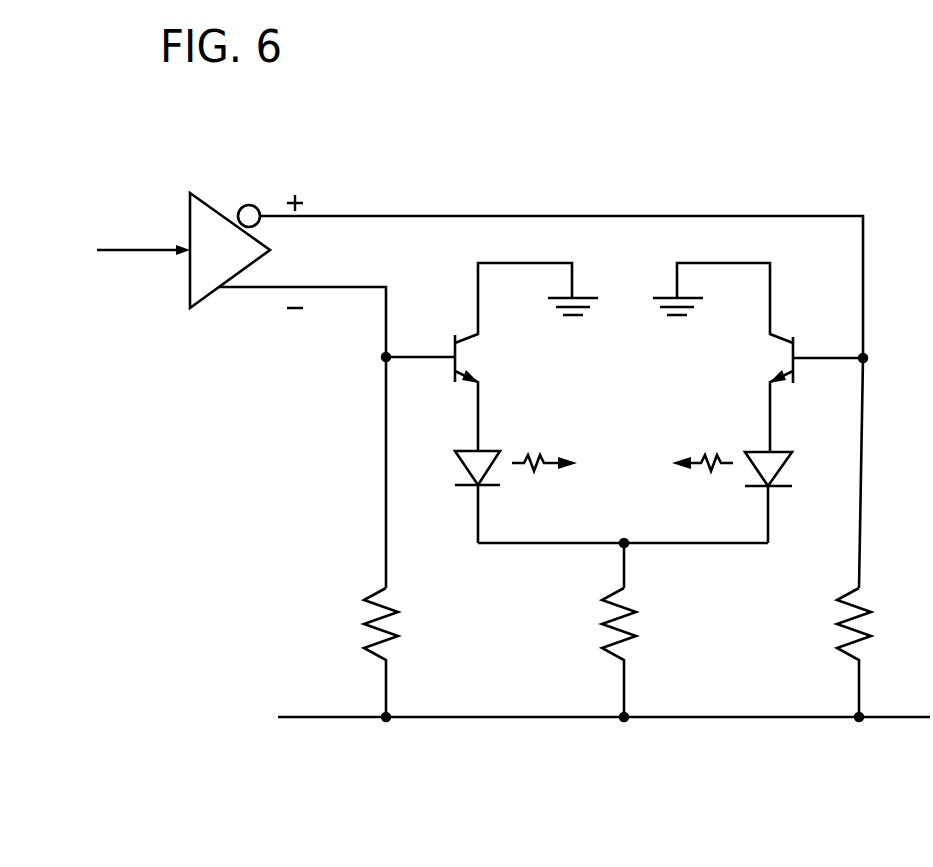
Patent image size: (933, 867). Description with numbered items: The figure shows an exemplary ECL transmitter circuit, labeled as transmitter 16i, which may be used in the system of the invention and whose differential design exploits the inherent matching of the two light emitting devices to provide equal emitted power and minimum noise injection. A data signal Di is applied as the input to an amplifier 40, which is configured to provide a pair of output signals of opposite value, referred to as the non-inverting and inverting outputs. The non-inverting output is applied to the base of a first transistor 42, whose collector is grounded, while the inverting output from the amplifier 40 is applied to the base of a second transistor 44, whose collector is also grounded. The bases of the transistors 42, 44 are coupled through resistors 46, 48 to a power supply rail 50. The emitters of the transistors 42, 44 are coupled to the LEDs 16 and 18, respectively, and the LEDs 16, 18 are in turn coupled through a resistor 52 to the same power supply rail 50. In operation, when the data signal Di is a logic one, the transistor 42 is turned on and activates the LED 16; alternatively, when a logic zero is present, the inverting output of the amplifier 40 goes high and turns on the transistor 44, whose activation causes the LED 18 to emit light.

The amplifier 40 is at (207, 204).
The first transistor 42 is at (452, 335).
The second transistor 44 is at (788, 336).
The LED 16 is at (456, 465).
The LED 18 is at (790, 470).
The resistor 46 is at (358, 620).
The resistor 48 is at (836, 620).
The resistor 52 is at (601, 620).
The power supply rail 50 is at (433, 717).
The transmitter 16i is at (493, 499).